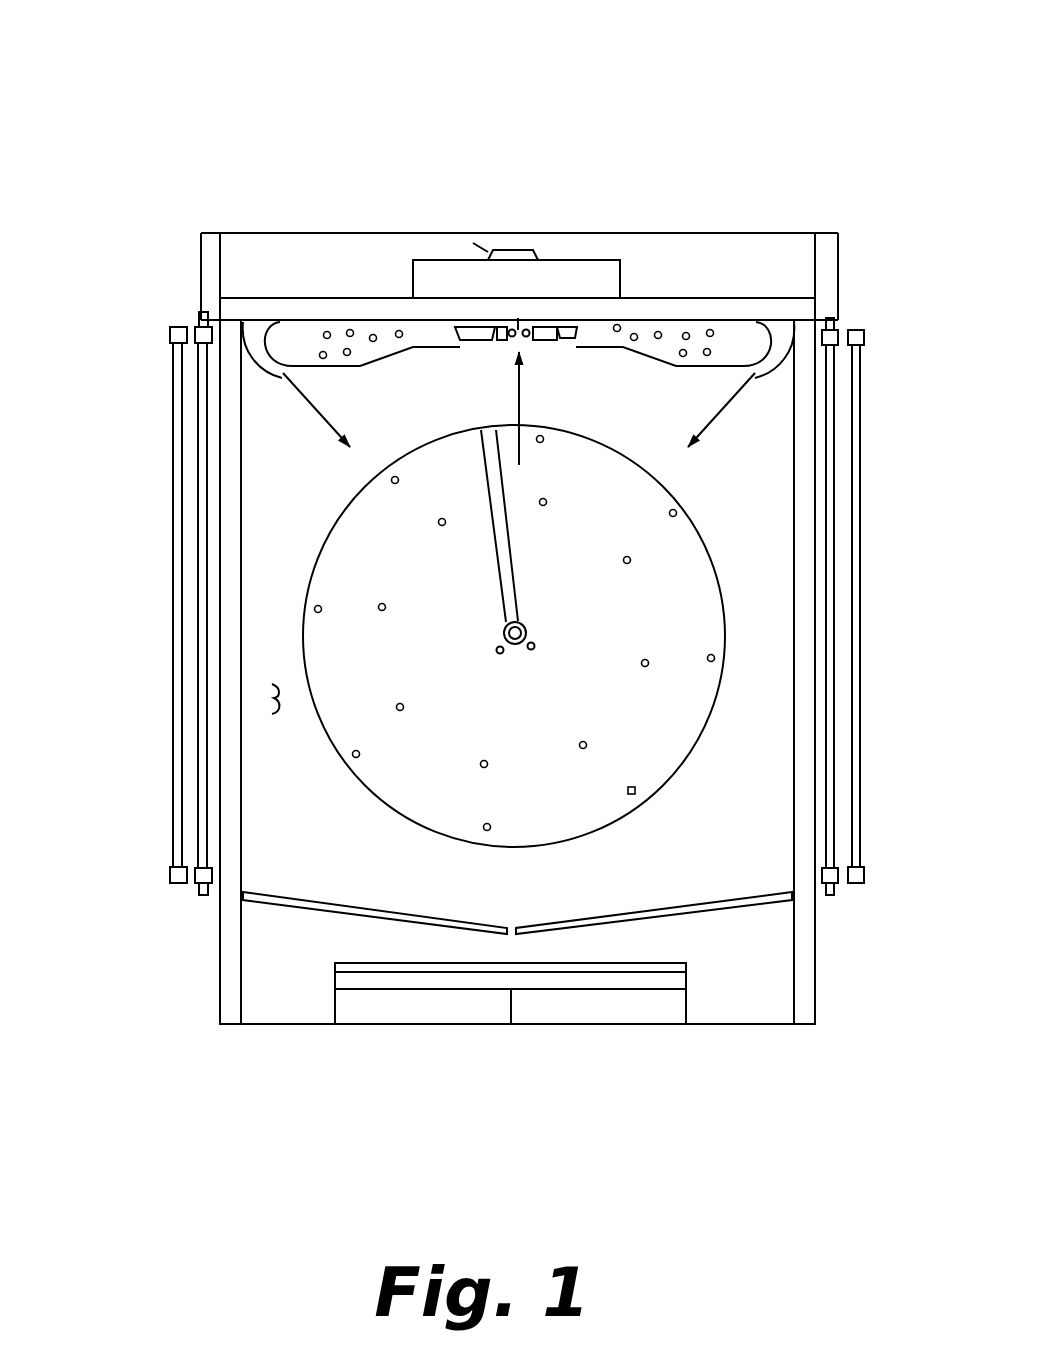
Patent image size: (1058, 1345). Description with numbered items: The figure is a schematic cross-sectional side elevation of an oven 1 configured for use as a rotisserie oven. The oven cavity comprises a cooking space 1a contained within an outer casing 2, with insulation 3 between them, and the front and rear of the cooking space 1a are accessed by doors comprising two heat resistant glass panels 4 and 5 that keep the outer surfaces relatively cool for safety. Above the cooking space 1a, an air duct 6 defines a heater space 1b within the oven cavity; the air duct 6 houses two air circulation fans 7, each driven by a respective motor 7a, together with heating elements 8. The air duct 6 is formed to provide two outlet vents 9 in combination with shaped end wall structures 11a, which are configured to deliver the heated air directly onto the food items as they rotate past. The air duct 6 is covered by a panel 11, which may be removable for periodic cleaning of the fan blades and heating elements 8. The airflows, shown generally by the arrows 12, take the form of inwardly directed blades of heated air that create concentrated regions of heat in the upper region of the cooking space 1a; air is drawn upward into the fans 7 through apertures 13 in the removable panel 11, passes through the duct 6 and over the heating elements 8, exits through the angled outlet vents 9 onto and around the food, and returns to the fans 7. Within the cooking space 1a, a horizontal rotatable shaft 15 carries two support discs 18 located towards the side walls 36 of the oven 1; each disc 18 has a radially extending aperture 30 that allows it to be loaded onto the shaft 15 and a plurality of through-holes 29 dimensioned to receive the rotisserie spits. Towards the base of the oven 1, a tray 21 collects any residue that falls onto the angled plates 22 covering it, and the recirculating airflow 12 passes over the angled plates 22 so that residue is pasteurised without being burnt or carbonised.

The oven 1 is at (768, 73).
The cooking space 1a is at (272, 698).
The heater space 1b is at (643, 327).
The outer casing 2 is at (812, 1022).
The insulation 3 is at (797, 1028).
The heat resistant glass panel 4 is at (176, 782).
The heat resistant glass panel 5 is at (202, 828).
The air duct 6 is at (417, 333).
The air circulation fan 7 is at (575, 320).
The motor 7a is at (541, 283).
The heating element 8 is at (325, 333).
The outlet vent 9 is at (280, 376).
The panel 11 is at (318, 368).
The shaped end wall structure 11a is at (247, 325).
The airflow arrows 12 is at (318, 402).
The aperture 13 is at (543, 343).
The horizontal rotatable shaft 15 is at (527, 631).
The support disc 18 is at (692, 612).
The tray 21 is at (382, 1012).
The angled plate 22 is at (320, 910).
The through-holes 29 is at (391, 486).
The radially extending aperture 30 is at (506, 573).
The side wall 36 is at (737, 732).